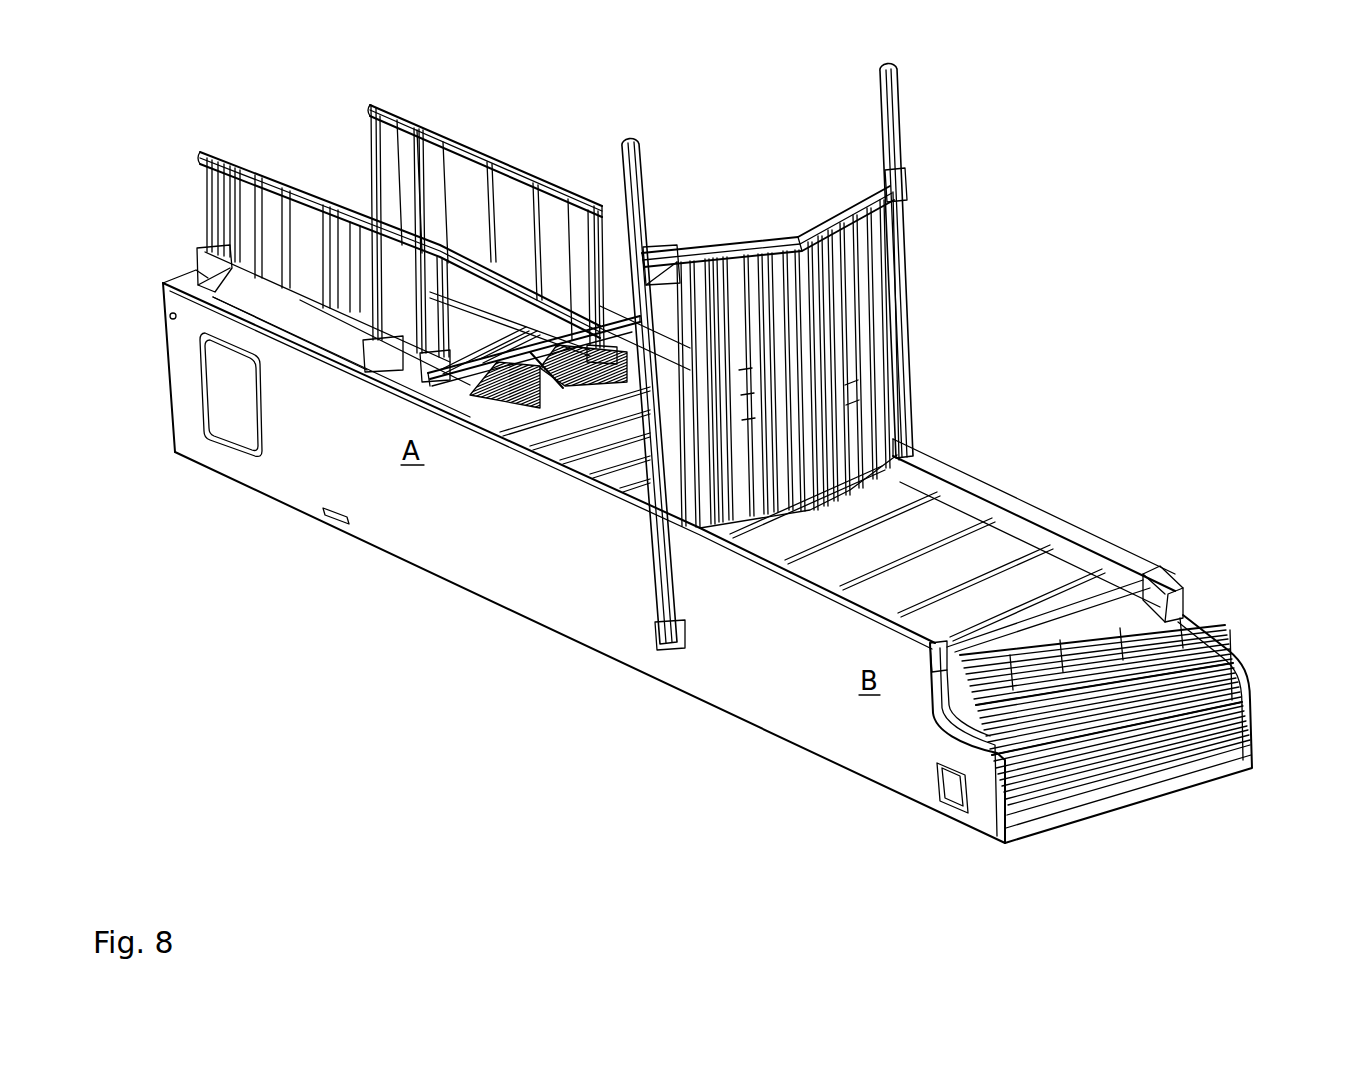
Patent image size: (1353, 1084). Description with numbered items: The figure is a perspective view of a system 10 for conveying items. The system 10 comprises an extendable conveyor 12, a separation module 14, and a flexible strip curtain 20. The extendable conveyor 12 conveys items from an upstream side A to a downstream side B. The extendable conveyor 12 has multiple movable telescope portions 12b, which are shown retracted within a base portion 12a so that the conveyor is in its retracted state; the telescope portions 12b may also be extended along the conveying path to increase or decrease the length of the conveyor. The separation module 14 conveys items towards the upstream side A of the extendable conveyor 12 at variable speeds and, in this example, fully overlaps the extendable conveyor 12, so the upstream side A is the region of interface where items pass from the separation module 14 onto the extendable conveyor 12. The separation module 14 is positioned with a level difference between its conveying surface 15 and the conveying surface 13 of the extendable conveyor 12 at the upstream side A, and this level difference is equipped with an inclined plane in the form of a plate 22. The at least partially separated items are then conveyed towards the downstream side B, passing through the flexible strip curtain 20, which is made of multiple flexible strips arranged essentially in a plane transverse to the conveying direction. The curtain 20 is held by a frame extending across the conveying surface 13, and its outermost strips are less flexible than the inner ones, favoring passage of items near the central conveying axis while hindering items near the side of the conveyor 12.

The system 10 is at (1056, 135).
The extendable conveyor 12 is at (606, 683).
The base portion 12a is at (590, 610).
The telescope portions 12b is at (1223, 621).
The conveying surface 13 is at (1008, 567).
The separation module 14 is at (472, 135).
The conveying surface 15 is at (479, 334).
The flexible strip curtain 20 is at (938, 347).
The plate 22 is at (545, 390).